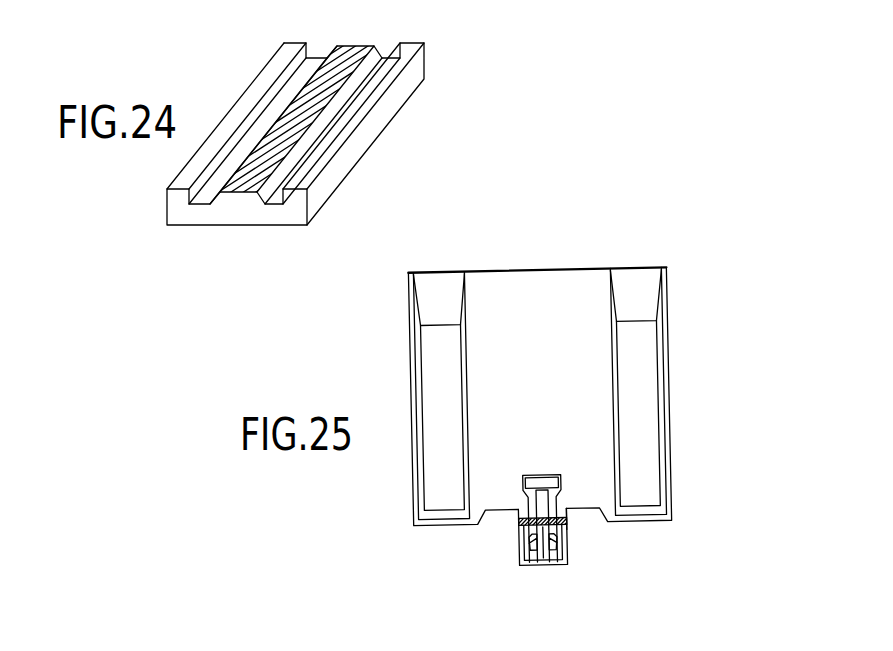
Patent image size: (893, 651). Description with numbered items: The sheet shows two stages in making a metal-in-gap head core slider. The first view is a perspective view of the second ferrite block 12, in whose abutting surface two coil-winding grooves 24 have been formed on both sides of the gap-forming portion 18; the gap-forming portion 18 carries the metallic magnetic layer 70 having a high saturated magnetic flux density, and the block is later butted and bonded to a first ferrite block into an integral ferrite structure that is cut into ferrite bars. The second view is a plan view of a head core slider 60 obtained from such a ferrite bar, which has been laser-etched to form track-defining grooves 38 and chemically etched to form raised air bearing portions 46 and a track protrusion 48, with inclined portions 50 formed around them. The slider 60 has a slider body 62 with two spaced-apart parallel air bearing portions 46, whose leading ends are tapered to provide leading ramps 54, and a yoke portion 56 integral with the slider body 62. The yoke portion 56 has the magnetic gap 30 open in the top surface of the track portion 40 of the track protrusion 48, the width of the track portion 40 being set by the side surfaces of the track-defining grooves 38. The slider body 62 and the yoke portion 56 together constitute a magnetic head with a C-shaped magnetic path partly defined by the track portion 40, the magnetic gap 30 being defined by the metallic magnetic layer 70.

In FIG. 24, the second ferrite block 12 is at (220, 99).
In FIG. 24, the gap-forming portion 18 is at (331, 63).
In FIG. 24, the coil-winding grooves 24 is at (313, 57).
In FIG. 24, the metallic magnetic layer 70 is at (350, 53).
In FIG. 25, the metallic magnetic layer 70 is at (519, 523).
In FIG. 25, the head core slider 60 is at (383, 311).
In FIG. 25, the slider body 62 is at (578, 280).
In FIG. 25, the leading ramps 54 is at (443, 283).
In FIG. 25, the air bearing portions 46 is at (425, 389).
In FIG. 25, the inclined portions 50 is at (420, 465).
In FIG. 25, the track protrusions 48 is at (543, 462).
In FIG. 25, the yoke portion 56 is at (509, 574).
In FIG. 25, the magnetic gap 30 is at (581, 523).
In FIG. 25, the track-defining grooves 38 is at (532, 556).
In FIG. 25, the track portion 40 is at (541, 552).